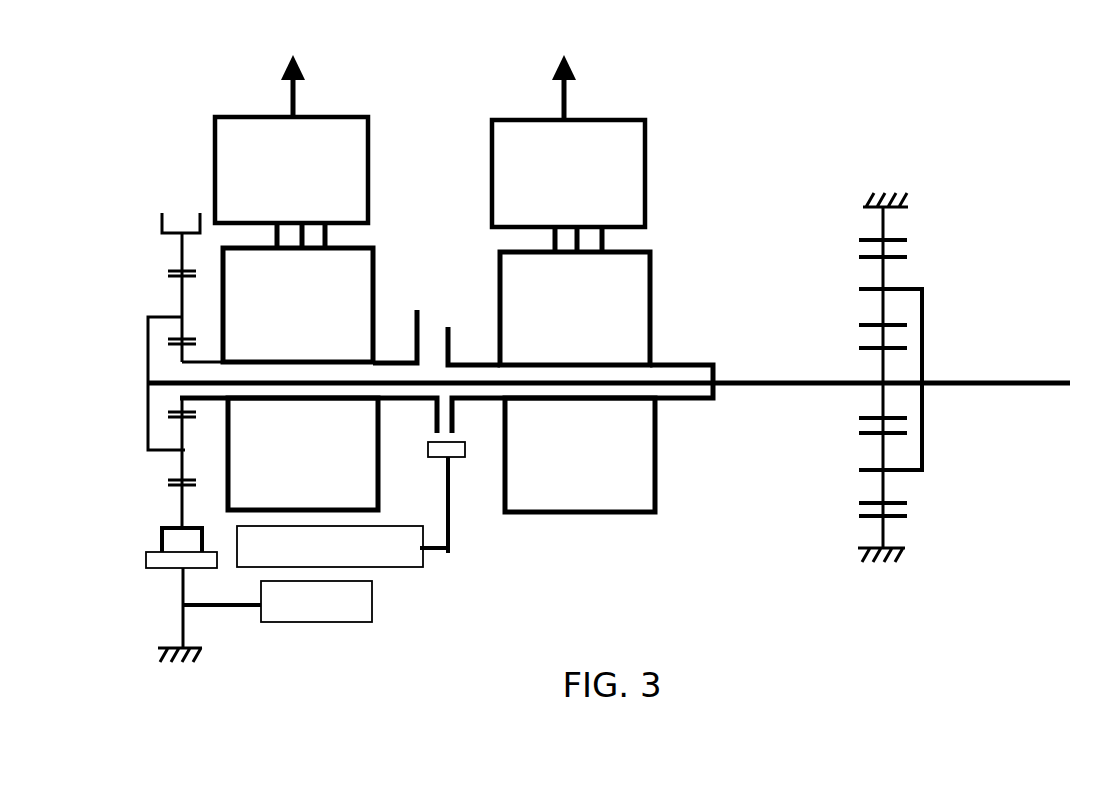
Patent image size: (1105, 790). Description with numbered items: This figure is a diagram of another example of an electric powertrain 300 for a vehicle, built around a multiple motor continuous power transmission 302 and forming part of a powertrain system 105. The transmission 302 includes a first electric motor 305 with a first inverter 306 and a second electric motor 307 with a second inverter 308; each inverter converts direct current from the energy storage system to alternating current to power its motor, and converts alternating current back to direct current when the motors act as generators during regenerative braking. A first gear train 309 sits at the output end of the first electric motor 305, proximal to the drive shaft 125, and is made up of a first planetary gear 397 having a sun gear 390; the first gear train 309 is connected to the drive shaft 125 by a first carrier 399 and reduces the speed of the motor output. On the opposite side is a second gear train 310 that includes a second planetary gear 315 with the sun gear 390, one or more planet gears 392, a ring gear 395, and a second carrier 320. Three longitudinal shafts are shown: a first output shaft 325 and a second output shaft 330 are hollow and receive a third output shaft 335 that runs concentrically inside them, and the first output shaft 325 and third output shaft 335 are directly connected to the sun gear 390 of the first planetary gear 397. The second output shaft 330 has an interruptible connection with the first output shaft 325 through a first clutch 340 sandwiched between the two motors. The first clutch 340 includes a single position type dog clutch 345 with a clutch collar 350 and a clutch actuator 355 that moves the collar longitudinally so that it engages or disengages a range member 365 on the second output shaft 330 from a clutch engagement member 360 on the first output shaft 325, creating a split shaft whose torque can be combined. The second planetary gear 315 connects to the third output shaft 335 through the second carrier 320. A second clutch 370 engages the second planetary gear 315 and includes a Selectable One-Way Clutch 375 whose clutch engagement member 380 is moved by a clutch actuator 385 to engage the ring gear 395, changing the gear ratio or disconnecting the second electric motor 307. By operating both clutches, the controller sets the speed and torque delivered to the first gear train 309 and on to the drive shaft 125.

The powertrain system 105 is at (932, 66).
The electric powertrain 300 is at (970, 104).
The multiple motor continuous power transmission 302 is at (923, 171).
The first electric motor 305 is at (650, 272).
The first inverter 306 is at (617, 120).
The second electric motor 307 is at (373, 268).
The second inverter 308 is at (347, 117).
The first gear train 309 is at (866, 606).
The second gear train 310 is at (126, 368).
The second planetary gear 315 is at (182, 294).
The second carrier 320 is at (148, 435).
The first output shaft 325 is at (697, 400).
The second output shaft 330 is at (386, 360).
The third output shaft 335 is at (165, 380).
The first clutch 340 is at (152, 563).
The dog clutch 345 is at (462, 458).
The clutch collar 350 is at (435, 458).
The clutch actuator 355 is at (415, 558).
The clutch engagement member 360 is at (452, 345).
The range member 365 is at (413, 317).
The second clutch 370 is at (382, 648).
The Selectable One-Way Clutch 375 is at (257, 607).
The clutch engagement member 380 is at (163, 567).
The clutch actuator 385 is at (303, 623).
The sun gear 390 is at (180, 405).
The planet gears 392 is at (182, 490).
The ring gear 395 is at (160, 533).
The first planetary gear 397 is at (883, 317).
The first carrier 399 is at (908, 289).
The drive shaft 125 is at (992, 385).